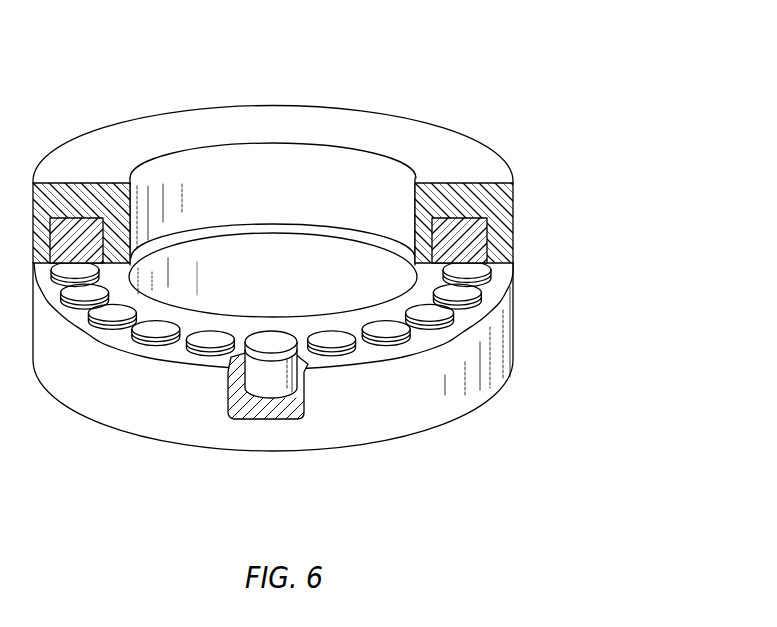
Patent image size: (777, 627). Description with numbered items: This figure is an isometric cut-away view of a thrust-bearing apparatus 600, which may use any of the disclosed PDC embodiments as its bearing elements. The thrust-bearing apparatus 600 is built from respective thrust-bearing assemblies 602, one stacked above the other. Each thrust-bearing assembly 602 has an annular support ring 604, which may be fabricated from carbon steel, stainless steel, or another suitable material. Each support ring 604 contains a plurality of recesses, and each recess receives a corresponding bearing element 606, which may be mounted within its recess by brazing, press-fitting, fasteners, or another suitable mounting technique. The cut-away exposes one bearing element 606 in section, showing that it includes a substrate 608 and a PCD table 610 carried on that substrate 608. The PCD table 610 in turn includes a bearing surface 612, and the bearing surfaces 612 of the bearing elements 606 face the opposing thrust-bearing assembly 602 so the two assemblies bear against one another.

The thrust-bearing apparatus 600 is at (497, 97).
The thrust-bearing assembly 602 is at (538, 243).
The annular support ring 604 is at (488, 212).
The bearing element 606 is at (252, 404).
The substrate 608 is at (273, 381).
The PCD table 610 is at (232, 357).
The bearing surface 612 is at (236, 343).